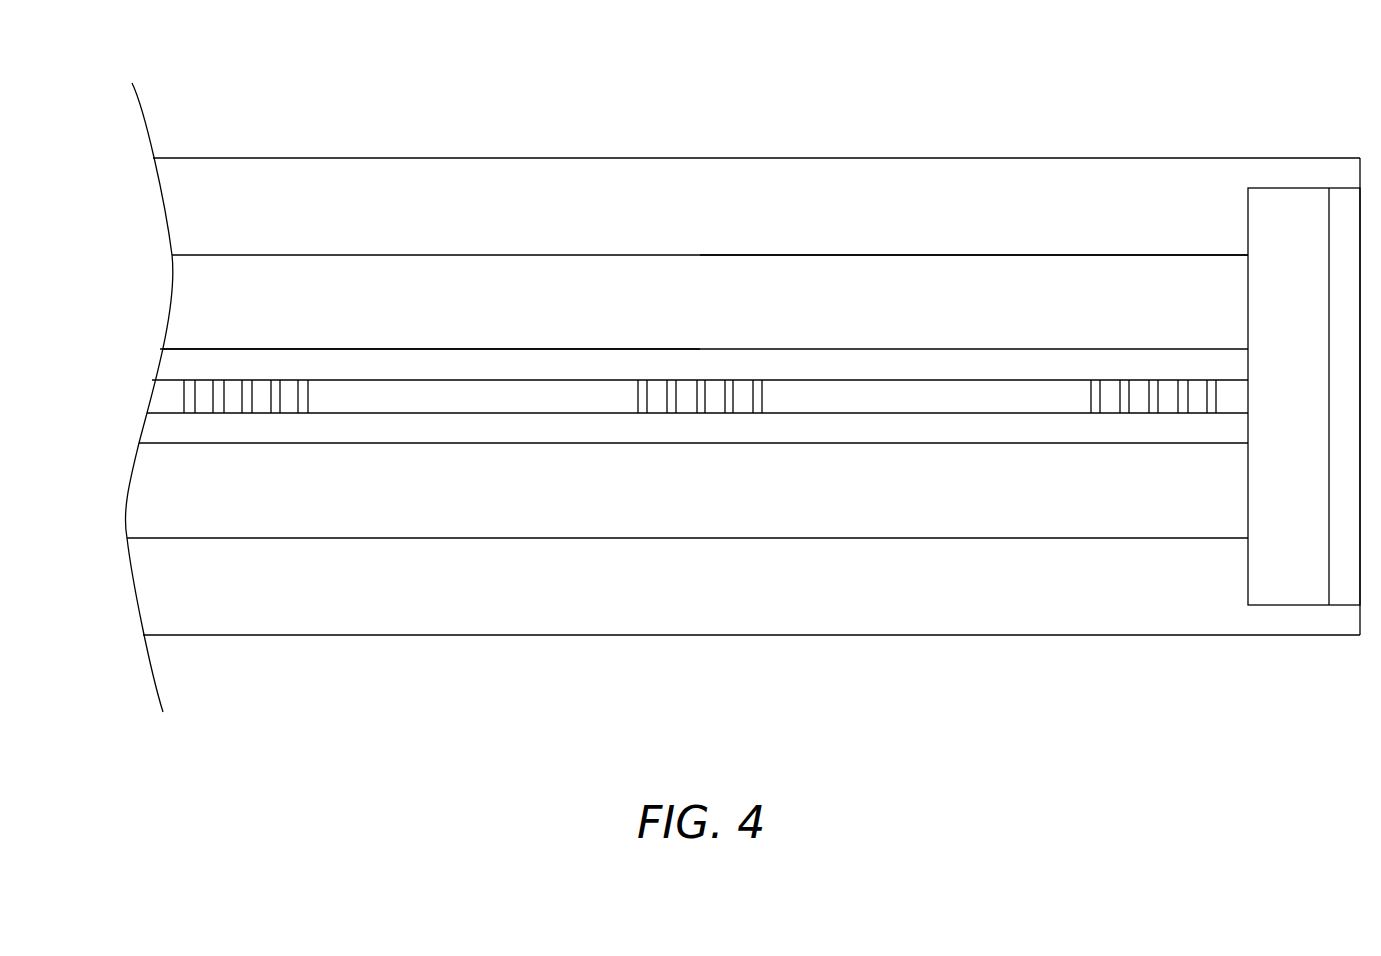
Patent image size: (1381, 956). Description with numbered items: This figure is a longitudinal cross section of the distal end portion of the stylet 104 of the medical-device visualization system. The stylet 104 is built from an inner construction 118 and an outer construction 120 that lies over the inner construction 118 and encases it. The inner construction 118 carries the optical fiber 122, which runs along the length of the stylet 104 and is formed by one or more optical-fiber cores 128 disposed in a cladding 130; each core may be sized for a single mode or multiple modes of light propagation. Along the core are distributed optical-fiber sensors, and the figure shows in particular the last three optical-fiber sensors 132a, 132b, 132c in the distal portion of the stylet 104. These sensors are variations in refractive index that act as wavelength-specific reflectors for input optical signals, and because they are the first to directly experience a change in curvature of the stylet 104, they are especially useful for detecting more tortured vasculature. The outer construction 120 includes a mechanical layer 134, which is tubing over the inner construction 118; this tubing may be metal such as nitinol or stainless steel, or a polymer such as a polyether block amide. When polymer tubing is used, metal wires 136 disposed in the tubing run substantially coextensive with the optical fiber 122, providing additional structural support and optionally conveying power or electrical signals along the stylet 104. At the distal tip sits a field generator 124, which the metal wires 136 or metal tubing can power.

The stylet 104 is at (713, 143).
The inner construction 118 is at (125, 349).
The outer construction 120 is at (125, 158).
The optical fiber 122 is at (563, 345).
The field generator 124 is at (1293, 215).
The optical-fiber cores 128 is at (377, 395).
The cladding 130 is at (930, 365).
The optical-fiber sensor 132a is at (1215, 667).
The optical-fiber sensor 132b is at (763, 667).
The optical-fiber sensor 132c is at (308, 667).
The mechanical layer 134 is at (198, 172).
The metal wires 136 is at (1037, 255).